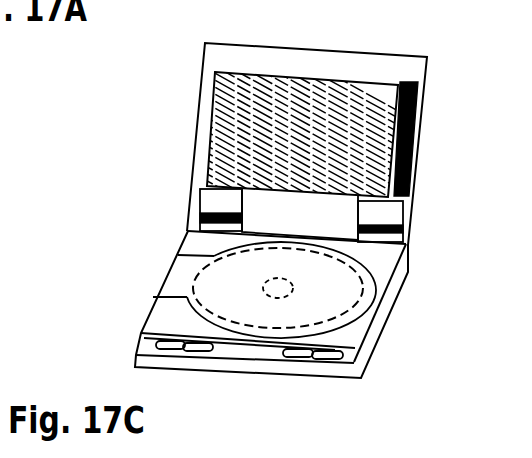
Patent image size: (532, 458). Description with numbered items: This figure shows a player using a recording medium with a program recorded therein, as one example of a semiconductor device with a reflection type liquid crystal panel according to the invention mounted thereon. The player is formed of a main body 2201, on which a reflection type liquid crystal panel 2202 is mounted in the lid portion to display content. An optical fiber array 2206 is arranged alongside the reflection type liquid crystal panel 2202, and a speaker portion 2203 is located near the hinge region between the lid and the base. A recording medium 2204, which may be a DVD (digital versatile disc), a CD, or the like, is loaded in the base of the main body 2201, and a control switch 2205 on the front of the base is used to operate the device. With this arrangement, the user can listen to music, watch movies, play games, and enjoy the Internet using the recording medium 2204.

The main body 2201 is at (307, 127).
The reflection type liquid crystal panel 2202 is at (290, 175).
The speaker portion 2203 is at (340, 215).
The recording medium 2204 is at (335, 290).
The control switch 2205 is at (299, 361).
The optical fiber array 2206 is at (444, 139).